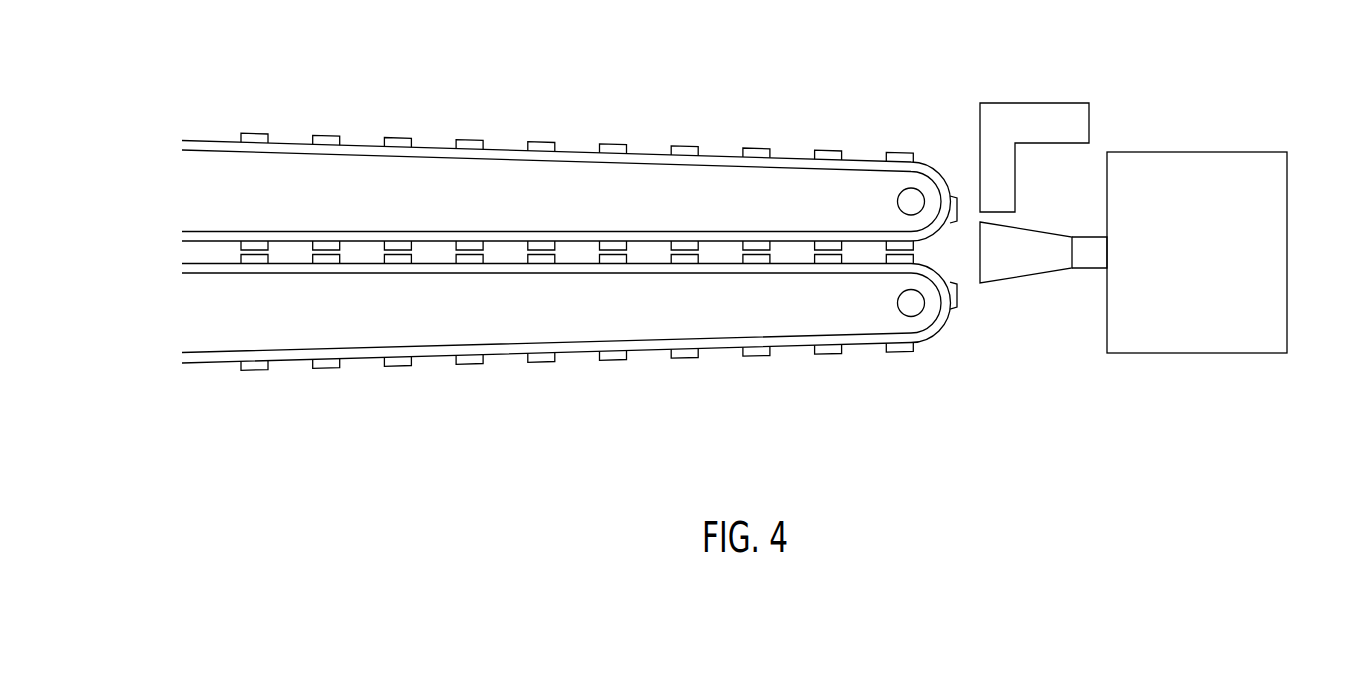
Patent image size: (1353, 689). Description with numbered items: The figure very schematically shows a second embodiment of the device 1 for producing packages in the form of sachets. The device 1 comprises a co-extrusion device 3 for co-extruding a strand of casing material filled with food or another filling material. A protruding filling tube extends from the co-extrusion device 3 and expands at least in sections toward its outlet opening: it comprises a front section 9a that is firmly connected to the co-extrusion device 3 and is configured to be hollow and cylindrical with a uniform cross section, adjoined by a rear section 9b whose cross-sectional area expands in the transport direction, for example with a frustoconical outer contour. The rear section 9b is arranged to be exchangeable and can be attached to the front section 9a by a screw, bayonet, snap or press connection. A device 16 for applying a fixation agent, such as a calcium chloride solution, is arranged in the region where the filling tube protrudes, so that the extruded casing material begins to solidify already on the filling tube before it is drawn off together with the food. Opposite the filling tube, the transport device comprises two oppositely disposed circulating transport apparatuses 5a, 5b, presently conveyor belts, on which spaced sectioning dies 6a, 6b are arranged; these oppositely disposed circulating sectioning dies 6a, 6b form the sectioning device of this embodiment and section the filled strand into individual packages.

The device 1 is at (423, 94).
The co-extrusion device 3 is at (1148, 354).
The circulating transport apparatus 5a is at (372, 143).
The circulating transport apparatus 5b is at (507, 357).
The sectioning die 6a is at (466, 140).
The sectioning die 6b is at (547, 363).
The front section of filling tube 9a is at (1092, 269).
The rear section of filling tube 9b is at (1027, 285).
The device for applying a fixation agent 16 is at (1047, 101).